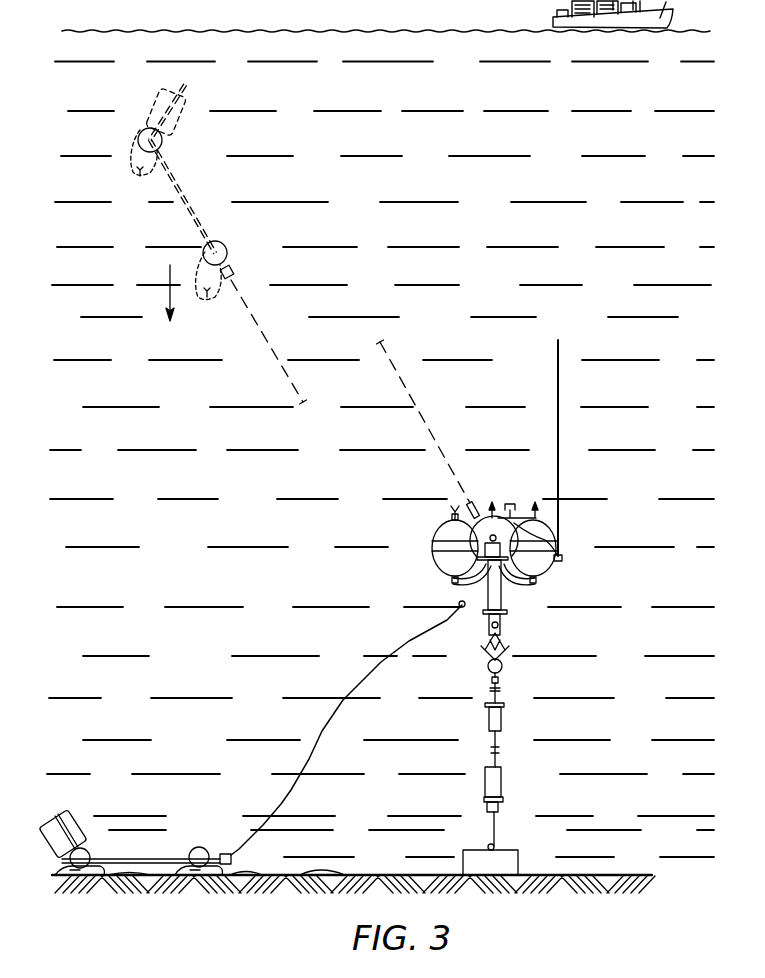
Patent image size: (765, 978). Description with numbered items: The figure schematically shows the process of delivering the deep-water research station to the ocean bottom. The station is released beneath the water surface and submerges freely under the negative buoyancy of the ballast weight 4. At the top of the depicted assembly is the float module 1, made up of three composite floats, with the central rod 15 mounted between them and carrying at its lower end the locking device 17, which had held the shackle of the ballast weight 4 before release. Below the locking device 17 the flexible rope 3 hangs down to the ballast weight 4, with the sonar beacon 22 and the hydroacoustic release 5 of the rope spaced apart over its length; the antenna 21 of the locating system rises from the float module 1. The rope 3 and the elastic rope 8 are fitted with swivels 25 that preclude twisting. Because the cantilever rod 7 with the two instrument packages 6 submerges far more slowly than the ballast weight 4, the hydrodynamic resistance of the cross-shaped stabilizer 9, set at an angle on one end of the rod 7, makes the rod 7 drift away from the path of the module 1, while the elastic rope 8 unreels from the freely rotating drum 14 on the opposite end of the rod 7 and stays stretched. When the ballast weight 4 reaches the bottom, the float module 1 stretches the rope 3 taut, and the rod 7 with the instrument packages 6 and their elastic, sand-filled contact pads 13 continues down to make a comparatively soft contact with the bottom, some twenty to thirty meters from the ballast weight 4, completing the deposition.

The float module 1 is at (440, 538).
The flexible rope link 3 is at (492, 832).
The ballast weight 4 is at (510, 862).
The release 5 is at (497, 778).
The instrument packages 6 is at (162, 143).
The cantilever rod 7 is at (196, 192).
The elastic rope 8 is at (270, 349).
The cross-shaped stabilizer 9 is at (189, 96).
The contact pad 13 is at (140, 174).
The freely rotating drum 14 is at (235, 272).
The central rod 15 is at (497, 593).
The locking device 17 is at (503, 666).
The antenna 21 is at (558, 447).
The sonar beacon 22 is at (488, 720).
The swivels 25 is at (472, 503).